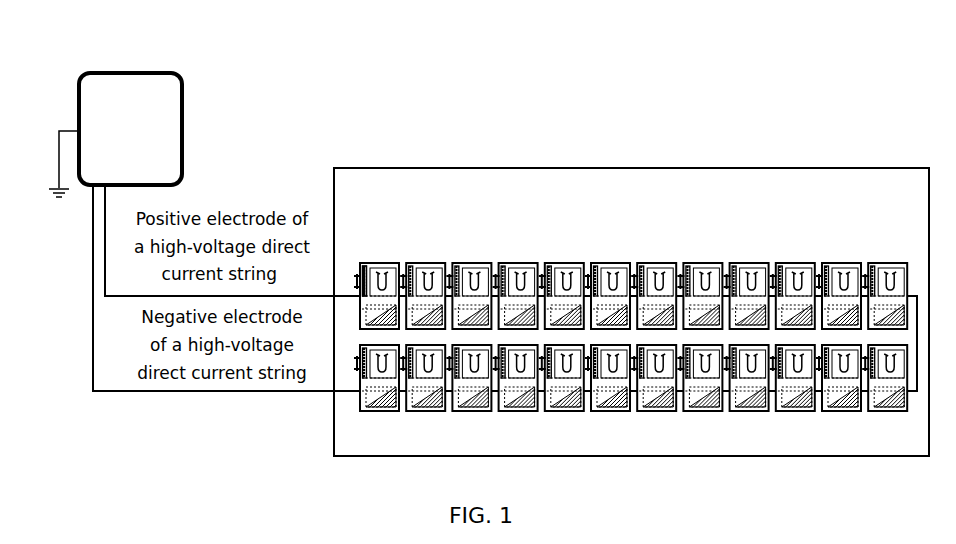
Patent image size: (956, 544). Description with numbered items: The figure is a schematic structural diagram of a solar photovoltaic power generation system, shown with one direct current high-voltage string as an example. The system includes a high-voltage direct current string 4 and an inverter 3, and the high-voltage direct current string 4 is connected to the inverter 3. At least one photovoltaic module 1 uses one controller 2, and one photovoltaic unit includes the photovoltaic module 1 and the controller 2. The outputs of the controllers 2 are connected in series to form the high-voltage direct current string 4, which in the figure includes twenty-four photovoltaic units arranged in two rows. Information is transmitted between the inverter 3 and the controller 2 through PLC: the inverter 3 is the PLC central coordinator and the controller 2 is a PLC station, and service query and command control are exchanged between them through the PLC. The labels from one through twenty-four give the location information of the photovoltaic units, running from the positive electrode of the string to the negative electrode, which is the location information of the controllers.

The photovoltaic module 1 is at (390, 263).
The controller 2 is at (367, 270).
The inverter 3 is at (182, 130).
The high-voltage direct current string 4 is at (608, 168).